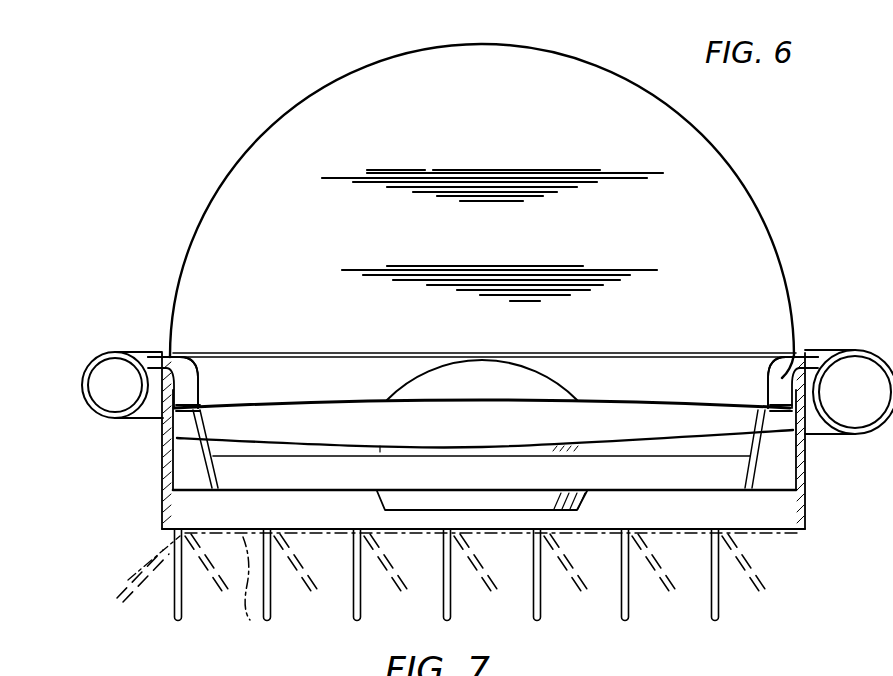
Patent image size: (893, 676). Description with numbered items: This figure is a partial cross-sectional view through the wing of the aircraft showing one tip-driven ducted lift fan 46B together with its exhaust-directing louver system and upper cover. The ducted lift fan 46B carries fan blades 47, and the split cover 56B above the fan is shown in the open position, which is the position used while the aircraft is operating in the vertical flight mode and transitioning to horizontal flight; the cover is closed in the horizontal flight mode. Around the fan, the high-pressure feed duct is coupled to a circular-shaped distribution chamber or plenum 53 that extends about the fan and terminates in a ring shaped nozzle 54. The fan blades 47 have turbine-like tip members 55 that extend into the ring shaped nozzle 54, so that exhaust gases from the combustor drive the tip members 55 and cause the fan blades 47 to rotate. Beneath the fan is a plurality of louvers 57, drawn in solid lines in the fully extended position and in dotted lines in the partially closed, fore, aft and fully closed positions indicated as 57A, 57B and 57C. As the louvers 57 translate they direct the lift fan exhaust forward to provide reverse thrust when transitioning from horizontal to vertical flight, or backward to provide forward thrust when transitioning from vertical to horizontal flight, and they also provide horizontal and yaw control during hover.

The gas-driven ducted lift fan 46B is at (816, 163).
The split cover 56B is at (777, 253).
The ring shaped nozzle 54 is at (182, 357).
The circular-shaped distribution chamber 53 is at (110, 352).
The turbine-like tip member 55 is at (160, 421).
The fan blade 47 is at (222, 436).
The louver 57 is at (175, 605).
The partially closed louver position 57A is at (132, 582).
The fore louver position 57B is at (220, 592).
The aft louver position 57C is at (250, 620).